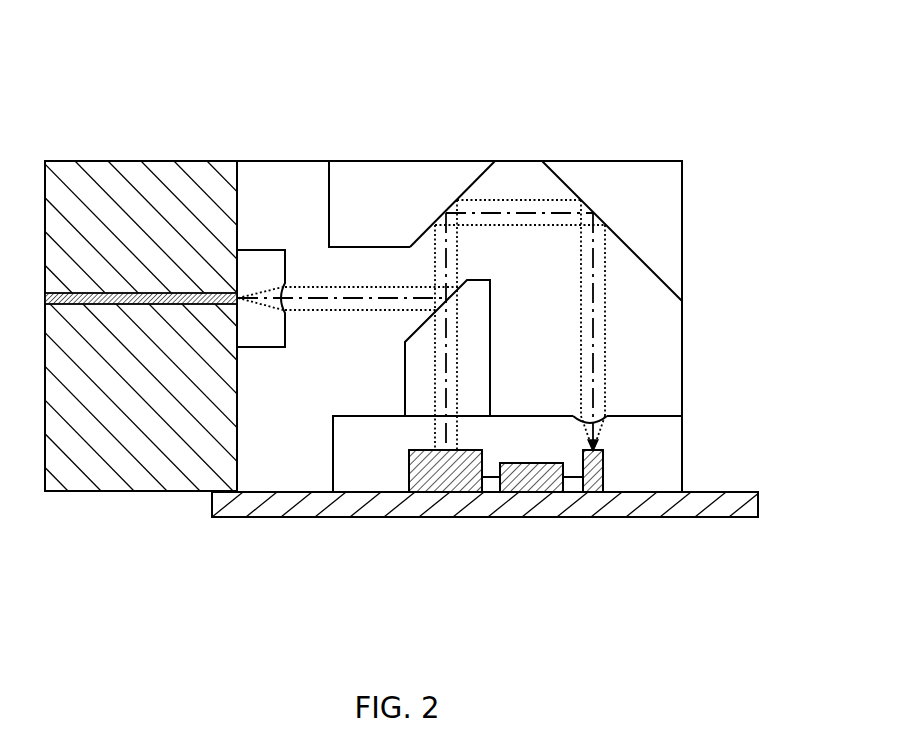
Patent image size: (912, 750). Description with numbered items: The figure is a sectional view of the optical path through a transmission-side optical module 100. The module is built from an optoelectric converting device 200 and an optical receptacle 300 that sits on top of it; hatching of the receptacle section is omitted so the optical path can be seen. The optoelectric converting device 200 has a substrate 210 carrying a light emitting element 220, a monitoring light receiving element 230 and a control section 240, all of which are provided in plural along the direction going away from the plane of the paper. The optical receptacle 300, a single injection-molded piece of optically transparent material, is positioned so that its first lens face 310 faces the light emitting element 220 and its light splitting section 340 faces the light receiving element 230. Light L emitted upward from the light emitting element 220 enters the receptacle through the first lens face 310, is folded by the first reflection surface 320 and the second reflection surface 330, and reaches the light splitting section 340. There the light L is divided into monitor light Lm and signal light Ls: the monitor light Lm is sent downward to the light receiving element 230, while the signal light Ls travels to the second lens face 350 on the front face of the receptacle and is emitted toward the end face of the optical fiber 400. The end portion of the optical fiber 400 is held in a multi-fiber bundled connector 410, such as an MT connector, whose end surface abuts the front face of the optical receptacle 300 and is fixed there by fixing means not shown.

The optical module 100 is at (733, 80).
The optoelectric converting device 200 is at (708, 473).
The substrate 210 is at (592, 512).
The light emitting element 220 is at (604, 472).
The light receiving element 230 is at (448, 492).
The control section 240 is at (537, 492).
The optical receptacle 300 is at (622, 152).
The first lens face 310 is at (606, 421).
The first reflection surface 320 is at (635, 252).
The second reflection surface 330 is at (457, 200).
The light splitting section 340 is at (463, 283).
The second lens face 350 is at (282, 284).
The optical fiber 400 is at (137, 295).
The connector 410 is at (184, 161).
The light L is at (604, 368).
The signal light Ls is at (350, 311).
The monitor light Lm is at (457, 372).